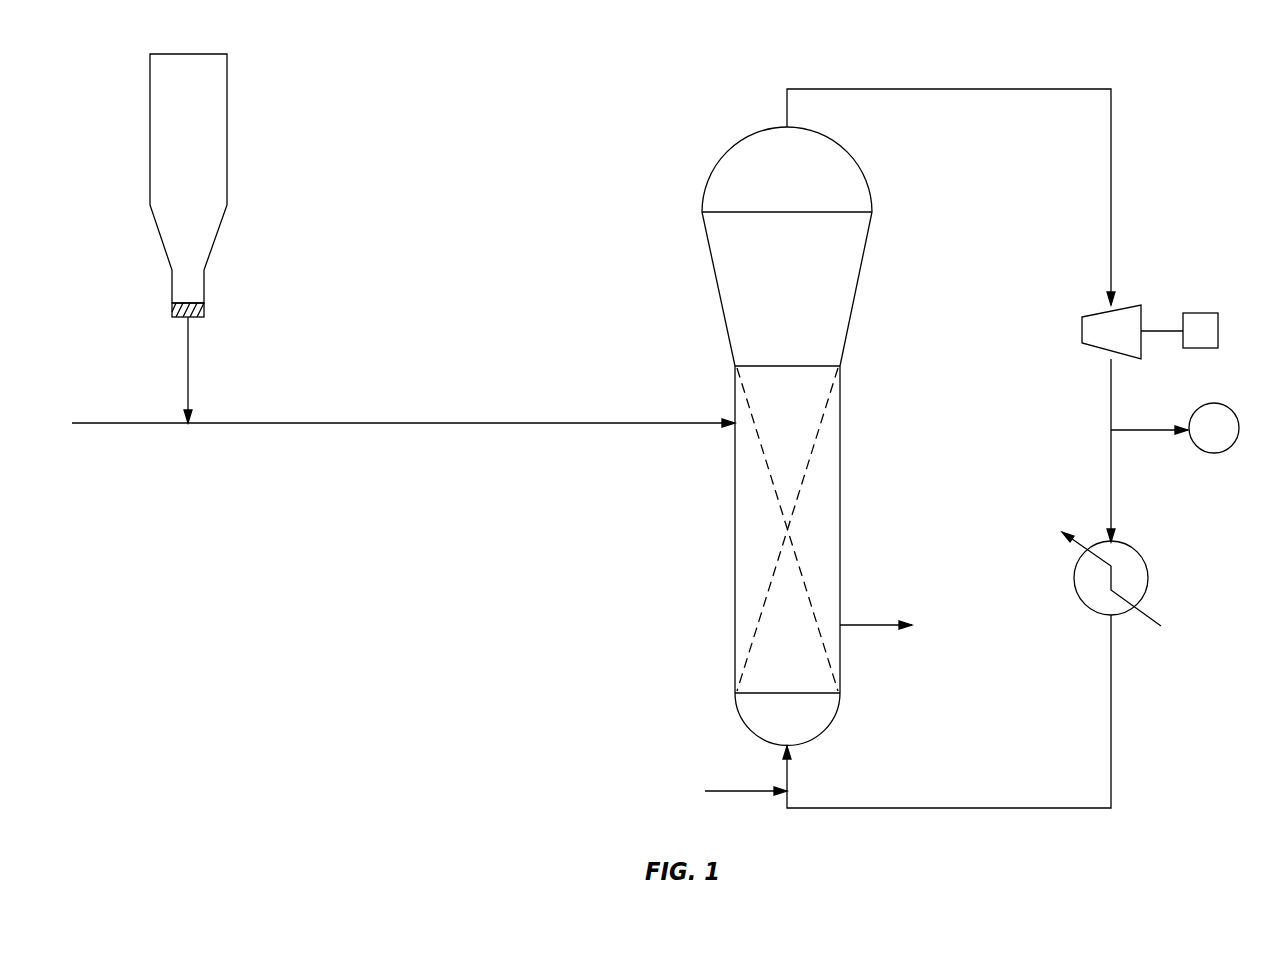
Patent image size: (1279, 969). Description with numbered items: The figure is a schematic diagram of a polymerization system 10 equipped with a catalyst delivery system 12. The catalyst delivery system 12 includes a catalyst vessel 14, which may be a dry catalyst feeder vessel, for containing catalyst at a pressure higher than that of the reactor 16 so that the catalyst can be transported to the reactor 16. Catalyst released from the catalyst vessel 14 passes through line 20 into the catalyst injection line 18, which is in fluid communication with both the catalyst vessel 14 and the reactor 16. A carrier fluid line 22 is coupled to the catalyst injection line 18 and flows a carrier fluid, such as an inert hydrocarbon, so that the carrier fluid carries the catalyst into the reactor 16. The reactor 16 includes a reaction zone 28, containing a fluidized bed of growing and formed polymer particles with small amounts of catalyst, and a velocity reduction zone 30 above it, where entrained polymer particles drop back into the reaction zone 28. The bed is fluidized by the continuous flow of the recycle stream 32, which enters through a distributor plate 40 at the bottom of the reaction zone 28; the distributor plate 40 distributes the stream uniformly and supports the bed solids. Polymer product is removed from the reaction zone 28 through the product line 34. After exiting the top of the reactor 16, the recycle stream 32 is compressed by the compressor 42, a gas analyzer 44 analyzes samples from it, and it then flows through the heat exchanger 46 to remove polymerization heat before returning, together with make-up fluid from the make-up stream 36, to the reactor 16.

The polymerization system 10 is at (528, 660).
The catalyst delivery system 12 is at (353, 183).
The catalyst vessel 14 is at (227, 130).
The reactor 16 is at (735, 553).
The catalyst injection line 18 is at (343, 423).
The line 20 is at (190, 370).
The carrier fluid line 22 is at (125, 424).
The reaction zone 28 is at (803, 403).
The velocity reduction zone 30 is at (803, 183).
The recycle stream 32 is at (975, 89).
The product line 34 is at (875, 625).
The make-up stream 36 is at (748, 791).
The distributor plate 40 is at (822, 694).
The compressor 42 is at (1133, 305).
The gas analyzer 44 is at (1218, 403).
The heat exchanger 46 is at (1137, 548).